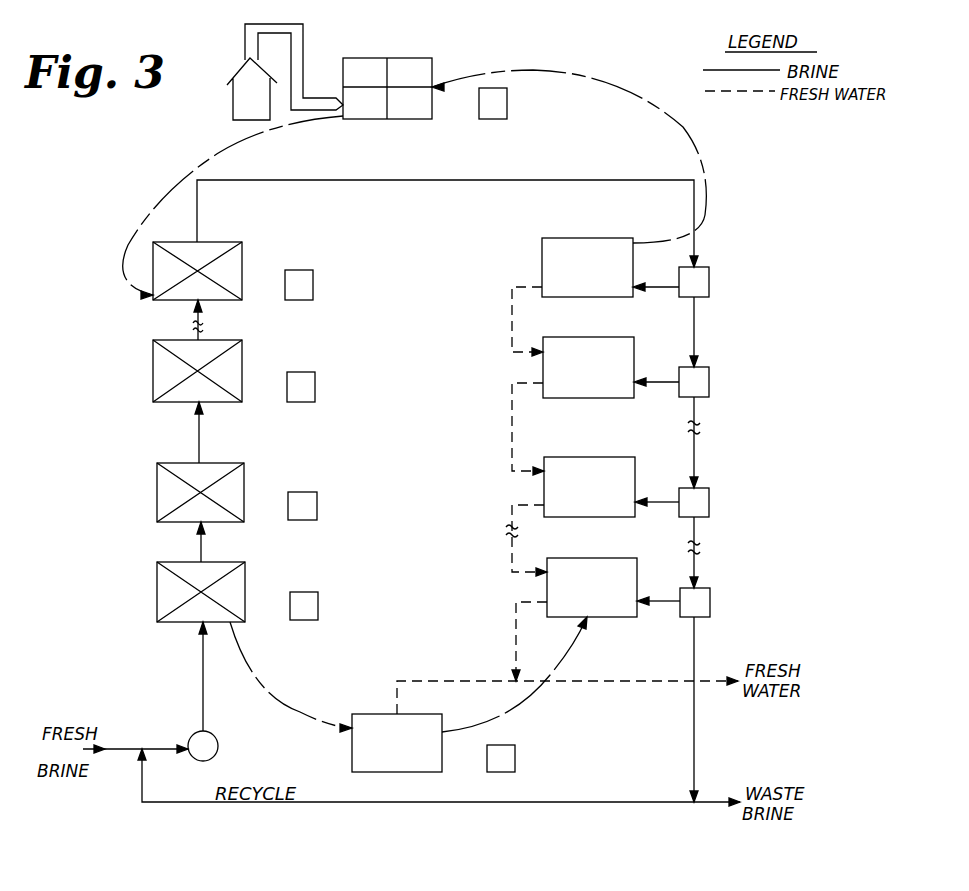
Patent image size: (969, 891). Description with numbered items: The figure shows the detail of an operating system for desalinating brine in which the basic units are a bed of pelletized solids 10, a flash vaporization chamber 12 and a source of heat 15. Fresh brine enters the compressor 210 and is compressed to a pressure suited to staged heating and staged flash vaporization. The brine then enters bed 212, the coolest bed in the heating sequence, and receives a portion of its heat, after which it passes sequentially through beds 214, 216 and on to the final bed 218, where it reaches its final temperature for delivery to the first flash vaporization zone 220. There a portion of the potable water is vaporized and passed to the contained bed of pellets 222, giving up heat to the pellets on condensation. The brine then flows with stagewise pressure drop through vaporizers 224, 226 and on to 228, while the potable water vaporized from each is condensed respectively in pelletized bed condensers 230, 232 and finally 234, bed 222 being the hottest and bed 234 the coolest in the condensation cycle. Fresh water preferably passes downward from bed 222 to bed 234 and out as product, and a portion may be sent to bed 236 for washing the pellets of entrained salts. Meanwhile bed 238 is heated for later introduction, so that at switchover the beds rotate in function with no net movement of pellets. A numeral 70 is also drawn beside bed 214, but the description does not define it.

The bed of pelletized solids 10 is at (416, 415).
The flash vaporization chamber 12 is at (526, 430).
The source of heat 15 is at (294, 21).
The ion exchange unit 70 is at (252, 498).
The compressor 210 is at (218, 746).
The bed 212 is at (245, 562).
The bed 214 is at (225, 482).
The bed 216 is at (242, 340).
The final bed 218 is at (242, 242).
The first flash vaporization zone 220 is at (698, 275).
The contained bed of pellets 222 is at (587, 238).
The vaporizer 224 is at (700, 372).
The vaporizer 226 is at (700, 490).
The vaporizer 228 is at (700, 590).
The pelletized bed condenser 230 is at (613, 343).
The pelletized bed condenser 232 is at (595, 457).
The pelletized bed condenser 234 is at (627, 558).
The bed 236 is at (435, 714).
The bed 238 is at (380, 57).